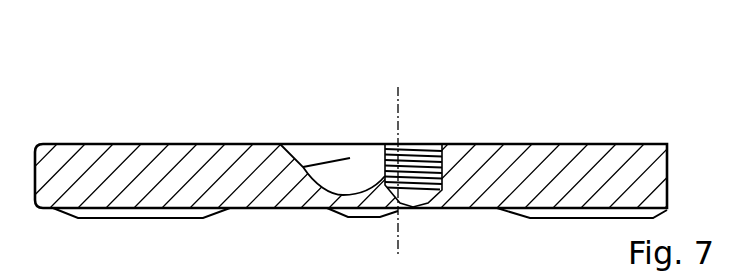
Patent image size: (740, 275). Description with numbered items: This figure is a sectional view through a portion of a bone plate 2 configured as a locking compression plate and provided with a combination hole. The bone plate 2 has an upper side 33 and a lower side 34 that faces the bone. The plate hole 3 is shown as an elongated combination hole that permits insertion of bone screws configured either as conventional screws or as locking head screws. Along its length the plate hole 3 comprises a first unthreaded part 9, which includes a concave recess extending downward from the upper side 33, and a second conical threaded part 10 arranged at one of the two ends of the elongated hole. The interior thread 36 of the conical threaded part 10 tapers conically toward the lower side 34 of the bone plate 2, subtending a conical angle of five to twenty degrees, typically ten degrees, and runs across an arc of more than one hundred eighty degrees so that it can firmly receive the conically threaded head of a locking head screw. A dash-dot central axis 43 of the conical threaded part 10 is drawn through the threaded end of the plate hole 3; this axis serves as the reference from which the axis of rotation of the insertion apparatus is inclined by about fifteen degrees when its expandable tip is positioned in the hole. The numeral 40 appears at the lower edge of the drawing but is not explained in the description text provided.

The bone plate 2 is at (158, 168).
The plate hole 3 is at (382, 135).
The first unthreaded part 9 is at (340, 178).
The second conical threaded part 10 is at (433, 144).
The upper side 33 is at (95, 143).
The lower side 34 is at (290, 208).
The interior thread 36 is at (473, 143).
The bottom recess 40 is at (498, 264).
The central axis 43 is at (399, 245).